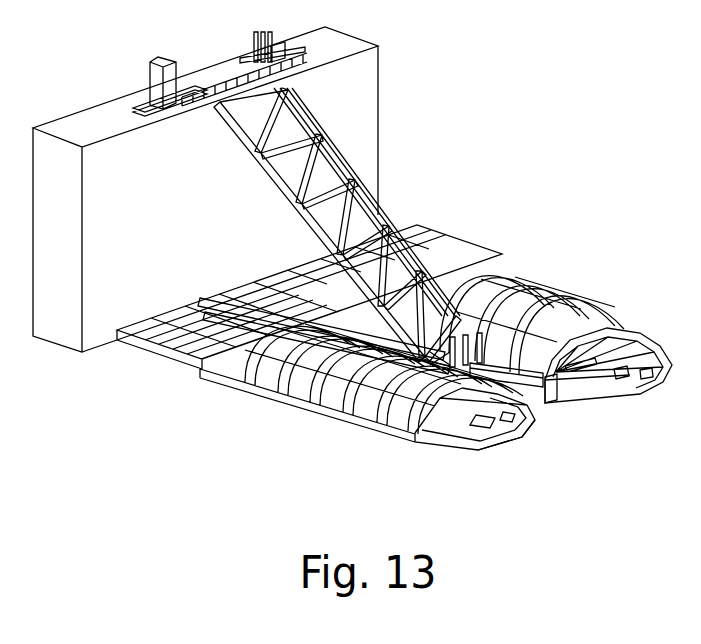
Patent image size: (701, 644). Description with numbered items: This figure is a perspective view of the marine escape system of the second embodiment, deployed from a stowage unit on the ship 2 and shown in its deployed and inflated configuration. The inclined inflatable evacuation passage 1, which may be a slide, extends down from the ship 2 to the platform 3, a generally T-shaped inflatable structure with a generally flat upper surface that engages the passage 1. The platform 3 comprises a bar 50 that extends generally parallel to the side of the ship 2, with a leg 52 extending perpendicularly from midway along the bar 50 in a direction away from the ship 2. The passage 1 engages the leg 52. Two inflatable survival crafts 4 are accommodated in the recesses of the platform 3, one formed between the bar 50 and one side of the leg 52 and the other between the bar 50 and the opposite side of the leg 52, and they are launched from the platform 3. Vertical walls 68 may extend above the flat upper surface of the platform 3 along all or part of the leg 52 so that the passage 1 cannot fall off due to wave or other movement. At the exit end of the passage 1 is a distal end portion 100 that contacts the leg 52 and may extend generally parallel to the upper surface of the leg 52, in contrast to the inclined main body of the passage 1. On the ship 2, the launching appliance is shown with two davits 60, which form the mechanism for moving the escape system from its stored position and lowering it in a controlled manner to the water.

The inflatable evacuation passage 1 is at (400, 220).
The ship 2 is at (363, 128).
The platform 3 is at (258, 307).
The inflatable survival craft 4 is at (375, 420).
The bar 50 is at (282, 307).
The leg 52 is at (525, 430).
The davit 60 is at (189, 100).
The vertical wall 68 is at (548, 395).
The distal end portion 100 is at (476, 328).